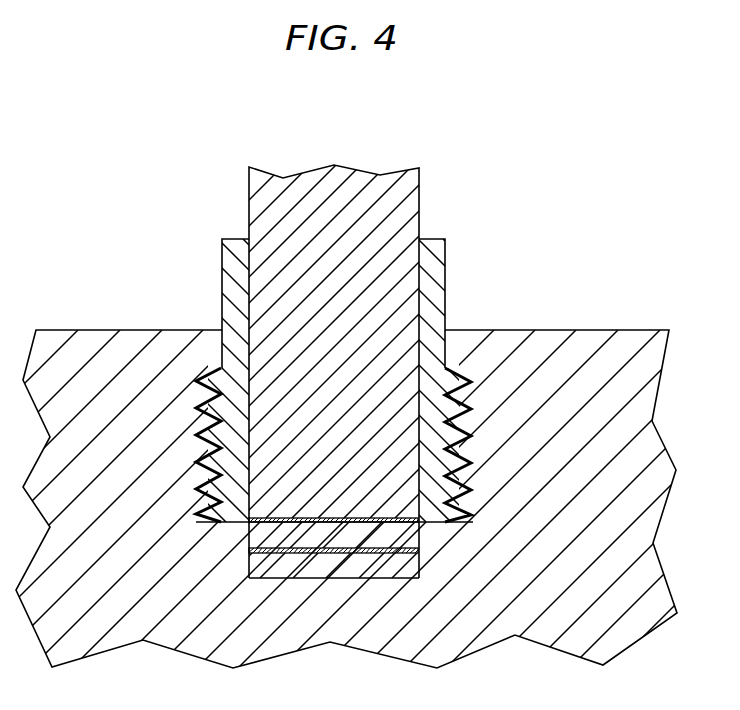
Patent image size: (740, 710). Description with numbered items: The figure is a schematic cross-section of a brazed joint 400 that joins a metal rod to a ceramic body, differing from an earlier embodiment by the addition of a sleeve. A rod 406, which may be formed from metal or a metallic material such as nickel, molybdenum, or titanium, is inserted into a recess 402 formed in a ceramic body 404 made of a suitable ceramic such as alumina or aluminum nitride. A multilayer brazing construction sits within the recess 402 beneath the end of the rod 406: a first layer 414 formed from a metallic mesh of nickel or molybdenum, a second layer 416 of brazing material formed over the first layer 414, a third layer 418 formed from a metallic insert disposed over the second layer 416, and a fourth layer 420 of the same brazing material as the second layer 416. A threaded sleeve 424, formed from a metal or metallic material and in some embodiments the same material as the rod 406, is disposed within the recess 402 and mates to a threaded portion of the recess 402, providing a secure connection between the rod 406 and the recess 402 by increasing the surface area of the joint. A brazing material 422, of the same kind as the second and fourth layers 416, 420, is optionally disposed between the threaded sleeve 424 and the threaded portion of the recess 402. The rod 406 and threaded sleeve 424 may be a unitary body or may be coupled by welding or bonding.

The brazed joint 400 is at (172, 141).
The recess 402 is at (420, 563).
The ceramic body 404 is at (632, 342).
The rod 406 is at (405, 186).
The first layer 414 is at (249, 568).
The second layer 416 is at (403, 551).
The third layer 418 is at (249, 537).
The fourth layer 420 is at (335, 519).
The brazing material 422 is at (212, 372).
The threaded sleeve 424 is at (434, 351).